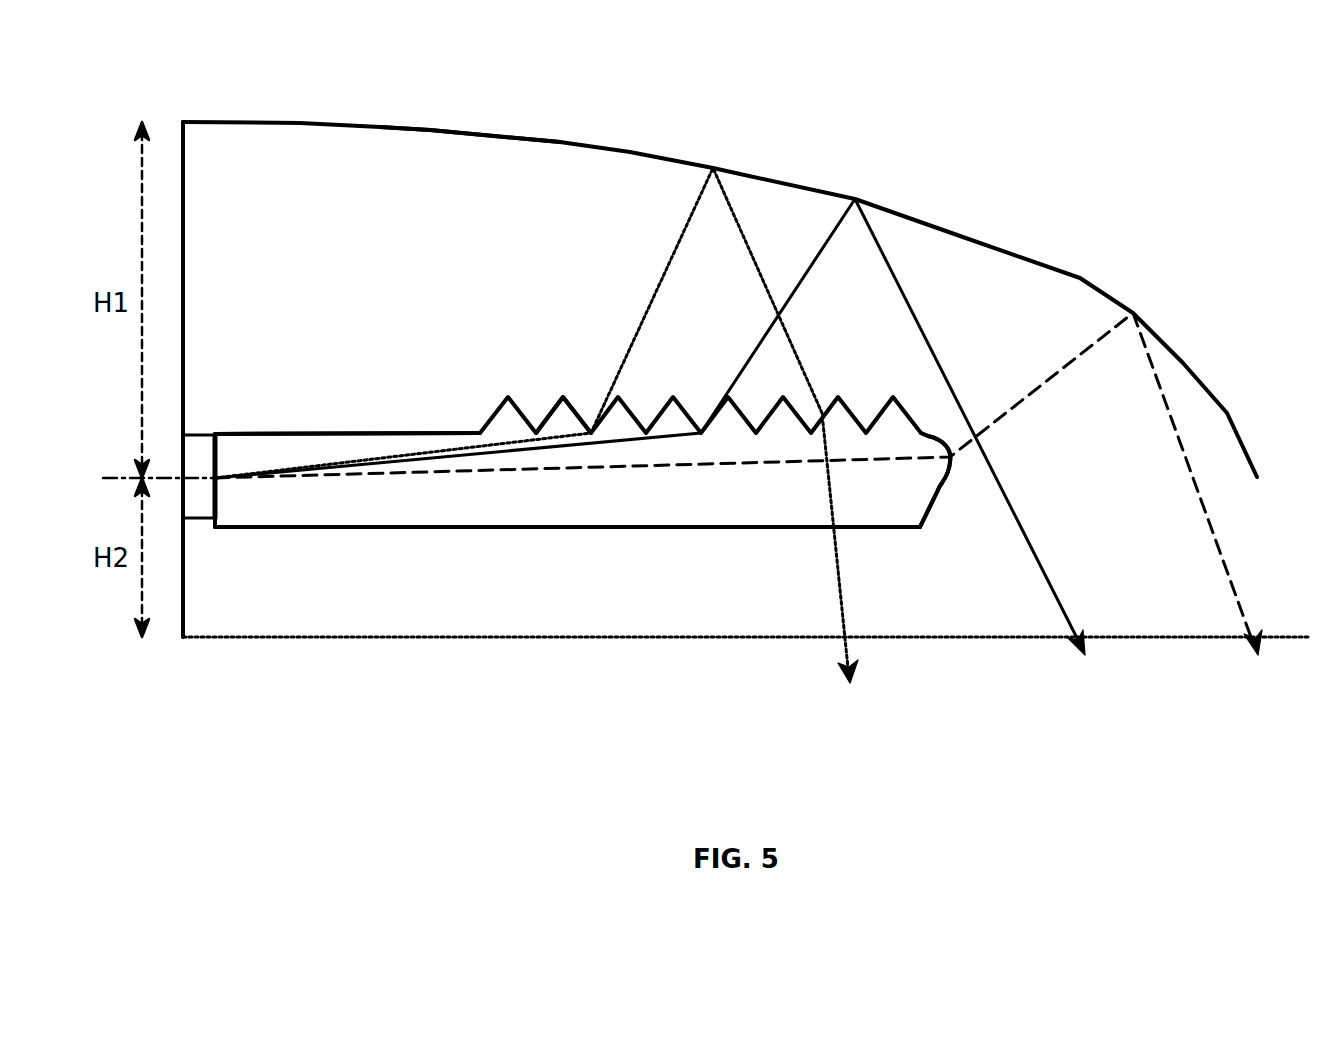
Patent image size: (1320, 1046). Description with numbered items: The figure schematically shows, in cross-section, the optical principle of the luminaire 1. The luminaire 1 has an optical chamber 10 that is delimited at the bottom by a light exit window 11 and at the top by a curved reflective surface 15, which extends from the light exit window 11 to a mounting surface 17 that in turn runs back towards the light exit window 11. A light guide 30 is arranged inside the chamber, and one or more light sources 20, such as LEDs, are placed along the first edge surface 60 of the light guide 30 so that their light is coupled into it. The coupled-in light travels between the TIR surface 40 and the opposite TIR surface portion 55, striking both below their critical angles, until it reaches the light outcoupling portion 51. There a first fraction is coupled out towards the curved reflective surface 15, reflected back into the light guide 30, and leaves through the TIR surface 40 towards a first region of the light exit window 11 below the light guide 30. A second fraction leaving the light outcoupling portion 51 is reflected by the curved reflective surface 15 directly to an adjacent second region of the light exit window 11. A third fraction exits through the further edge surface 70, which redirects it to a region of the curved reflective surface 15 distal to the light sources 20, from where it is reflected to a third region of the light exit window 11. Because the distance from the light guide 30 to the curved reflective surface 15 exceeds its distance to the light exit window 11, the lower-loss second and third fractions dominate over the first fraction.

The luminaire 1 is at (746, 428).
The optical chamber 10 is at (620, 185).
The light exit window 11 is at (320, 637).
The curved reflective surface 15 is at (432, 132).
The mounting surface 17 is at (183, 190).
The light source 20 is at (197, 447).
The light guide 30 is at (654, 467).
The TIR surface 40 is at (553, 527).
The light outcoupling portion 51 is at (562, 408).
The TIR surface portion 55 is at (343, 432).
The first edge surface 60 is at (216, 506).
The further edge surface 70 is at (950, 460).